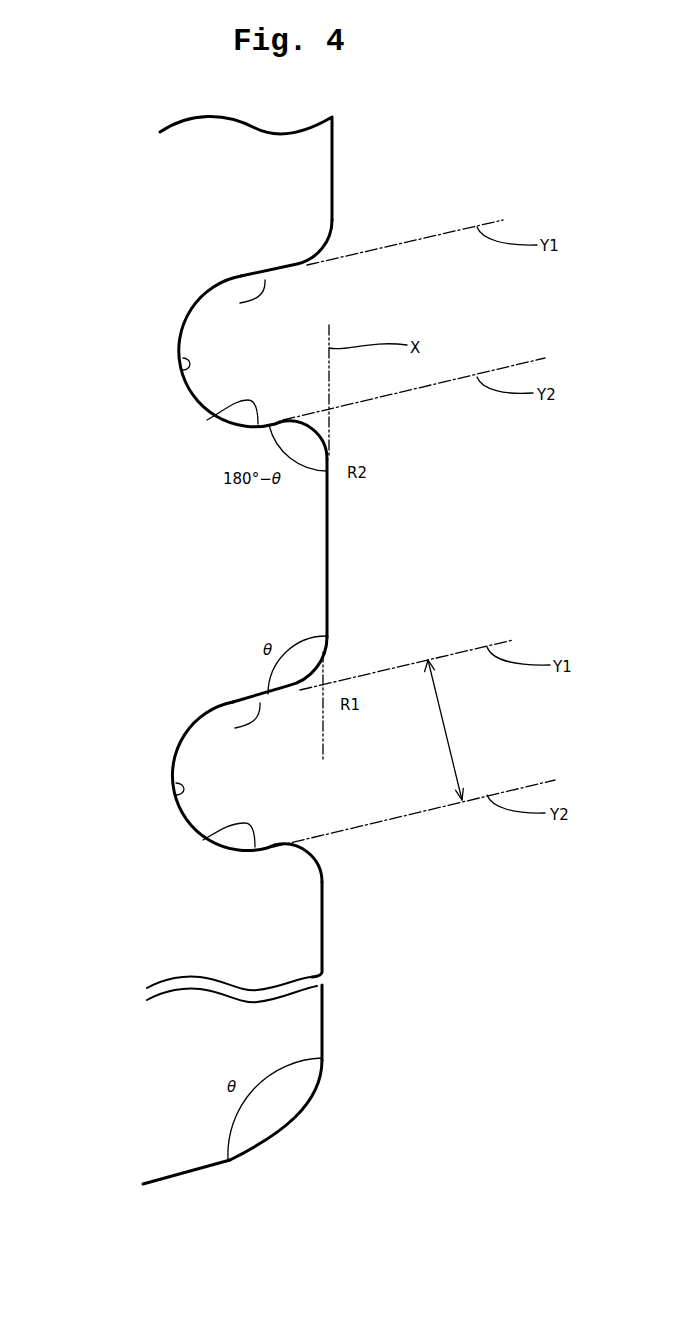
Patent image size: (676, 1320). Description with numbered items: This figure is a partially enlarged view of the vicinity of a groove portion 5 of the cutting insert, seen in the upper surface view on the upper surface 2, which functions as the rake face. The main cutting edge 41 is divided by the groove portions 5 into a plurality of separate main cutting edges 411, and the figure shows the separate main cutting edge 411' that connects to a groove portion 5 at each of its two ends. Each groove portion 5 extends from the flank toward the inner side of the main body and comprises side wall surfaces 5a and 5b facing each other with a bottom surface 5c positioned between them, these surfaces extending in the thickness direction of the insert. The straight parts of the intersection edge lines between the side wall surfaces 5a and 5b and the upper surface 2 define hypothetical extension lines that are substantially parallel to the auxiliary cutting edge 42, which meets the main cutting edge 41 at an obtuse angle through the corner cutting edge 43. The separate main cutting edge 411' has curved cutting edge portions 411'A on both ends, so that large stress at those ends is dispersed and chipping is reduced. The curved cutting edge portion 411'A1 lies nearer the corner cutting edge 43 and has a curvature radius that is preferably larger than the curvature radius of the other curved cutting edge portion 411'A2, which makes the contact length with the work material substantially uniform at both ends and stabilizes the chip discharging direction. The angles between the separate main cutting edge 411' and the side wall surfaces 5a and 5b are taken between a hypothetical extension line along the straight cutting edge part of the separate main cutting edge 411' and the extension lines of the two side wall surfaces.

The separate main cutting edge 411 is at (320, 546).
The separate main cutting edge 411' is at (410, 548).
The curved cutting edge portion 411'A is at (368, 533).
The curved cutting edge portion 411'A1 is at (354, 642).
The curved cutting edge portion 411'A2 is at (410, 451).
The groove portion 5 is at (76, 345).
The side wall surface 5a is at (207, 420).
The side wall surface 5b is at (240, 303).
The bottom surface 5c is at (183, 365).
The upper surface 2 is at (270, 912).
The main cutting edge 41 is at (322, 1027).
The auxiliary cutting edge 42 is at (192, 1172).
The corner cutting edge 43 is at (297, 1115).